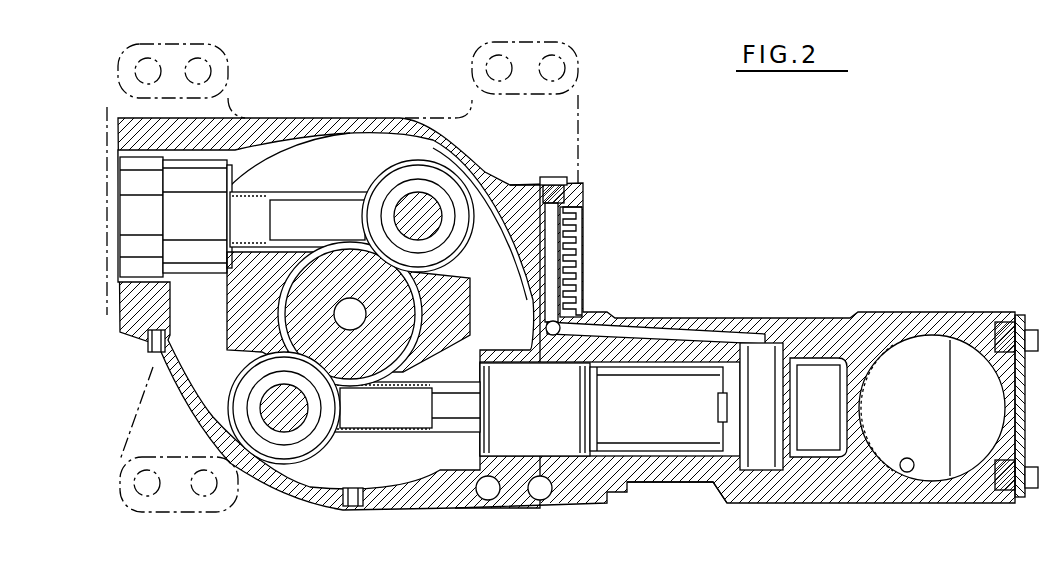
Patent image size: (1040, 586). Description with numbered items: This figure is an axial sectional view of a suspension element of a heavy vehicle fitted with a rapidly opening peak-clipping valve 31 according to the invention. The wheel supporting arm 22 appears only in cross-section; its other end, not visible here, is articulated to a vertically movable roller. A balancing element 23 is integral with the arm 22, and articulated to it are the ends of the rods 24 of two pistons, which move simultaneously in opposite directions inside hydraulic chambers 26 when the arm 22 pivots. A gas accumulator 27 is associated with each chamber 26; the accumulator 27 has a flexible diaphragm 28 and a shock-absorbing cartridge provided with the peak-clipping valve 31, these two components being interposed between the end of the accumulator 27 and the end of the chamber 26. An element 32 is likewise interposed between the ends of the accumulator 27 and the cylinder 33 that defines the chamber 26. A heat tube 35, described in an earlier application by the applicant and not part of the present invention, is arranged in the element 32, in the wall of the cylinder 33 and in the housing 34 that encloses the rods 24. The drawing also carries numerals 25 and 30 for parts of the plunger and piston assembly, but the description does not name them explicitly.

The wheel supporting arm 22 is at (305, 306).
The balancing element 23 is at (227, 343).
The rods 24 is at (330, 188).
The plunger 25 is at (143, 206).
The hydraulic chambers 26 is at (698, 440).
The gas accumulator 27 is at (933, 312).
The flexible diaphragm 28 is at (907, 472).
The piston 30 is at (719, 407).
The peak-clipping valve 31 is at (816, 420).
The element 32 is at (768, 457).
The cylinder 33 is at (658, 484).
The housing 34 is at (386, 130).
The heat tube 35 is at (700, 326).